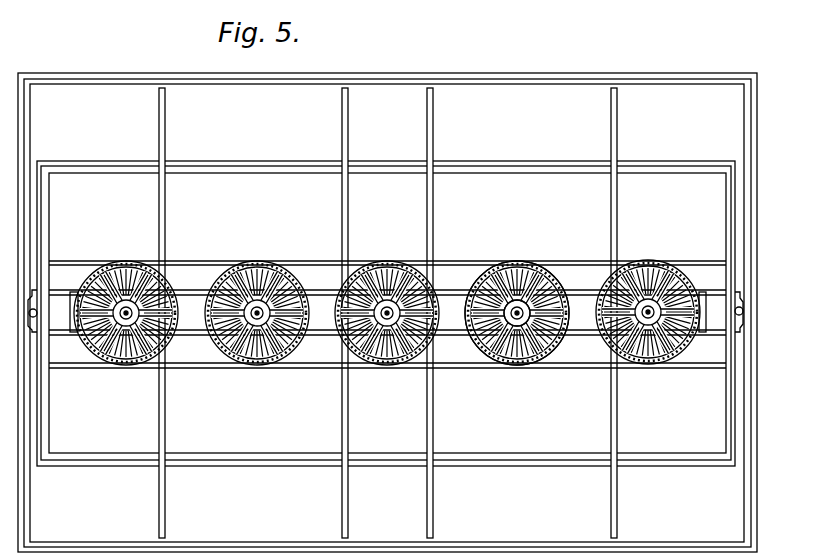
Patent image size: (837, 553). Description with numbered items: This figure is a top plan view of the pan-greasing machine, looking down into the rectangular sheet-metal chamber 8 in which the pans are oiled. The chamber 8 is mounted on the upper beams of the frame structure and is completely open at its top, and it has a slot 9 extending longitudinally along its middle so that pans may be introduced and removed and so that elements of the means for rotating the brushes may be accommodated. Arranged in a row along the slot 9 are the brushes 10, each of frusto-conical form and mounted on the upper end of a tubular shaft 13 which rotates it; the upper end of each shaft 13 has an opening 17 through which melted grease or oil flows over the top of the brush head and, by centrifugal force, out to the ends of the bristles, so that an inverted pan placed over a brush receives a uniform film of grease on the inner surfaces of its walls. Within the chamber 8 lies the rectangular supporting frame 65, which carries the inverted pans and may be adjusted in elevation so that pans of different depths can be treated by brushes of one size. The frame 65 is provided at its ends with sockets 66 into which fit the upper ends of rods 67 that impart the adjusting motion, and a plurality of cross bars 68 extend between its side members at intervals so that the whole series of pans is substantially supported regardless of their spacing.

The chamber 8 is at (745, 110).
The frame 65 is at (480, 160).
The cross bars 68 is at (165, 118).
The slot 9 is at (455, 290).
The brushes 10 is at (124, 260).
The tubular shaft 13 is at (545, 275).
The opening 17 is at (500, 340).
The sockets 66 is at (745, 296).
The rods 67 is at (37, 315).